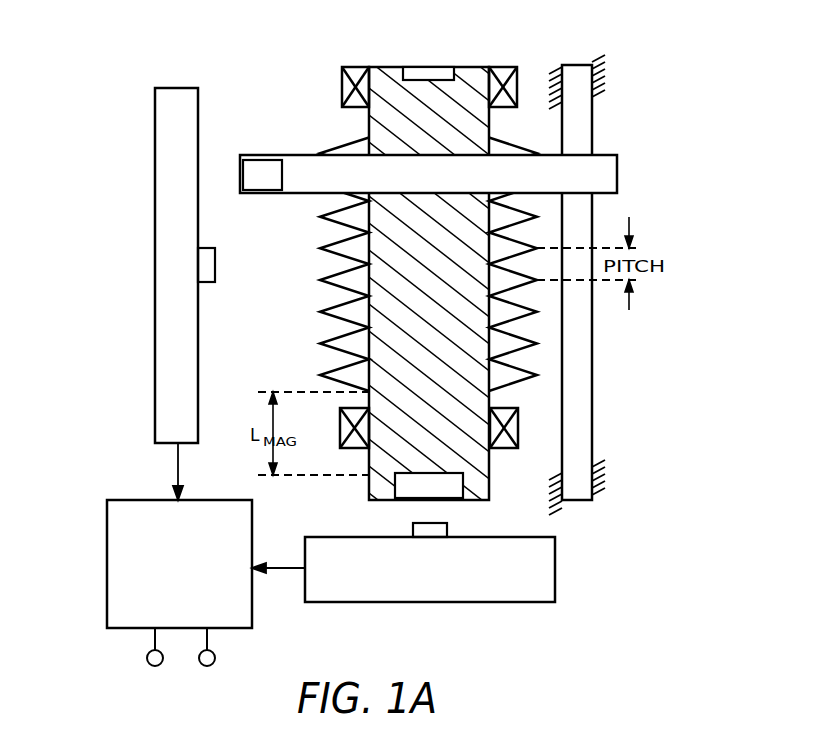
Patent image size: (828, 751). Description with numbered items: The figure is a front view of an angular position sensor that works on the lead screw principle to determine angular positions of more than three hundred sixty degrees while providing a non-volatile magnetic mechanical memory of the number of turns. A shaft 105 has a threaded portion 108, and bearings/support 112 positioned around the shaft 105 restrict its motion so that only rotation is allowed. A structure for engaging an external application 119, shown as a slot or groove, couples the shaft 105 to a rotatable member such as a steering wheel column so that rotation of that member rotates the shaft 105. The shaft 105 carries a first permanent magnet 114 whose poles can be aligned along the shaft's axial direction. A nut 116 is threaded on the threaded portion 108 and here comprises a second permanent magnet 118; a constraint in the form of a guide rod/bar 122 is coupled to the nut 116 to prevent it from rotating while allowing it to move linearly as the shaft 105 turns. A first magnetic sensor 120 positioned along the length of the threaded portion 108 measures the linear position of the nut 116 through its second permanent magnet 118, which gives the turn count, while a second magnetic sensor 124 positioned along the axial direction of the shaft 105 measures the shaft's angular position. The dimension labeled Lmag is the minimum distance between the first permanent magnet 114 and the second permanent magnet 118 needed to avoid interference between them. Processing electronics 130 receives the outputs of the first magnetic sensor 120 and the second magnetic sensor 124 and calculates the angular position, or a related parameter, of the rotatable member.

The shaft 105 is at (463, 385).
The threaded portion 108 is at (312, 153).
The bearings/support 112 is at (505, 67).
The first permanent magnet 114 is at (467, 483).
The nut 116 is at (617, 172).
The second permanent magnet 118 is at (258, 160).
The structure for engaging an external application 119 is at (410, 67).
The first magnetic sensor 120 is at (155, 306).
The constraint (guide rod/bar) 122 is at (592, 125).
The second magnetic sensor 124 is at (555, 571).
The processing electronics 130 is at (107, 520).